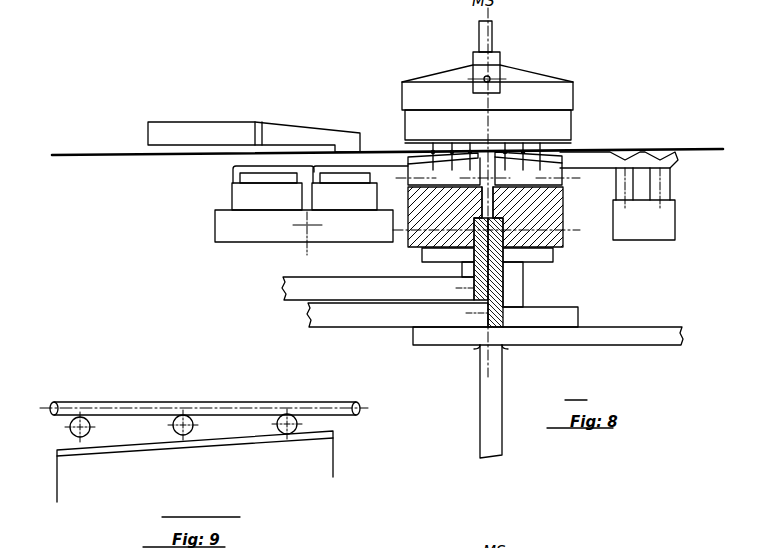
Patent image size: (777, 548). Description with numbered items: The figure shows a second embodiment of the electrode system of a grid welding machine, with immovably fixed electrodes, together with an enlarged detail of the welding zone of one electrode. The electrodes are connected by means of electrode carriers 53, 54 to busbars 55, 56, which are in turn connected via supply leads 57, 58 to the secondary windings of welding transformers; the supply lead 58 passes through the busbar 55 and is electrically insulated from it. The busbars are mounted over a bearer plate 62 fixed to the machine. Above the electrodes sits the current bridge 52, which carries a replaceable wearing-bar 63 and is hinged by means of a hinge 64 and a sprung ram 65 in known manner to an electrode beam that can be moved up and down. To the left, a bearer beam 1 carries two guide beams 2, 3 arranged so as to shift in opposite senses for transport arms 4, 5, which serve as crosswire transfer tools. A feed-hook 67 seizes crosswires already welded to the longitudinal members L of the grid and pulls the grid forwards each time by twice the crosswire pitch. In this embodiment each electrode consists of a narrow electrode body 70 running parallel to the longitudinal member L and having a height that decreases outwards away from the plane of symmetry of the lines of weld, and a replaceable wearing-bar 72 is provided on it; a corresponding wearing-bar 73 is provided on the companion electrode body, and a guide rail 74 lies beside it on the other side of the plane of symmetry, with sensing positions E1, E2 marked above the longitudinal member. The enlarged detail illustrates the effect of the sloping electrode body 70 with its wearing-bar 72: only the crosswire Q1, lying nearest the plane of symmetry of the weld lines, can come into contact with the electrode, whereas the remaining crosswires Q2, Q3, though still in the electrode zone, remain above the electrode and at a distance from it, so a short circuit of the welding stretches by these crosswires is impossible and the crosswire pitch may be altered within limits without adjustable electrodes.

In FIG. 8, the bearer beam 1 is at (338, 233).
In FIG. 8, the guide beam 2 is at (271, 206).
In FIG. 8, the guide beam 3 is at (342, 206).
In FIG. 8, the transport arm 4 is at (625, 203).
In FIG. 8, the transport arm 5 is at (589, 167).
In FIG. 8, the current bridge 52 is at (493, 131).
In FIG. 8, the electrode carrier 53 is at (458, 220).
In FIG. 8, the electrode carrier 54 is at (538, 219).
In FIG. 8, the busbar 55 is at (421, 256).
In FIG. 8, the busbar 56 is at (498, 277).
In FIG. 8, the supply lead 57 is at (378, 296).
In FIG. 8, the supply lead 58 is at (380, 321).
In FIG. 8, the bearer plate 62 is at (630, 327).
In FIG. 8, the wearing-bar 63 is at (512, 139).
In FIG. 8, the hinge 64 is at (490, 79).
In FIG. 8, the sprung ram 65 is at (487, 42).
In FIG. 8, the feed-hook 67 is at (230, 123).
In FIG. 8, the electrode body 70 is at (444, 172).
In FIG. 9, the electrode body 70 is at (238, 483).
In FIG. 8, the wearing-bar 72 is at (408, 155).
In FIG. 9, the wearing-bar 72 is at (127, 448).
In FIG. 8, the wearing-bar 73 is at (573, 151).
In FIG. 8, the guide rail 74 is at (528, 169).
In FIG. 8, the sensor position E1 is at (631, 140).
In FIG. 8, the sensor position E2 is at (666, 140).
In FIG. 8, the longitudinal member L is at (700, 144).
In FIG. 9, the longitudinal member L is at (317, 400).
In FIG. 9, the crosswire Q1 is at (277, 423).
In FIG. 9, the crosswire Q2 is at (173, 430).
In FIG. 9, the crosswire Q3 is at (88, 430).